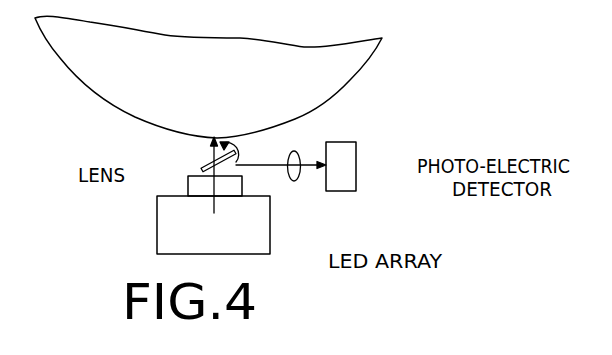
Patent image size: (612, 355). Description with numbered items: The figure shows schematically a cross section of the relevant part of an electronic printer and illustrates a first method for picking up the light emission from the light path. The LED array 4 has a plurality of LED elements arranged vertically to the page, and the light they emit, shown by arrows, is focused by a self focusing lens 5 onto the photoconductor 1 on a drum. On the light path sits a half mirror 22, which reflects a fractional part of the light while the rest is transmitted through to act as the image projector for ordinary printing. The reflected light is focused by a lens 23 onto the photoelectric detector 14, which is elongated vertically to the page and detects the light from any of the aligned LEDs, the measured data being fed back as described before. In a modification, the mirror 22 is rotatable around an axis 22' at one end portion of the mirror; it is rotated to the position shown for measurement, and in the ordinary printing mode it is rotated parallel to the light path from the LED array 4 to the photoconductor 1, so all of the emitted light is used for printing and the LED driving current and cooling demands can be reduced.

The photoconductor 1 is at (363, 68).
The LED array 4 is at (270, 232).
The self focusing lens 5 is at (193, 190).
The half mirror 22 is at (200, 155).
The axis 22' is at (247, 149).
The lens 23 is at (294, 152).
The photoelectric detector 14 is at (356, 152).